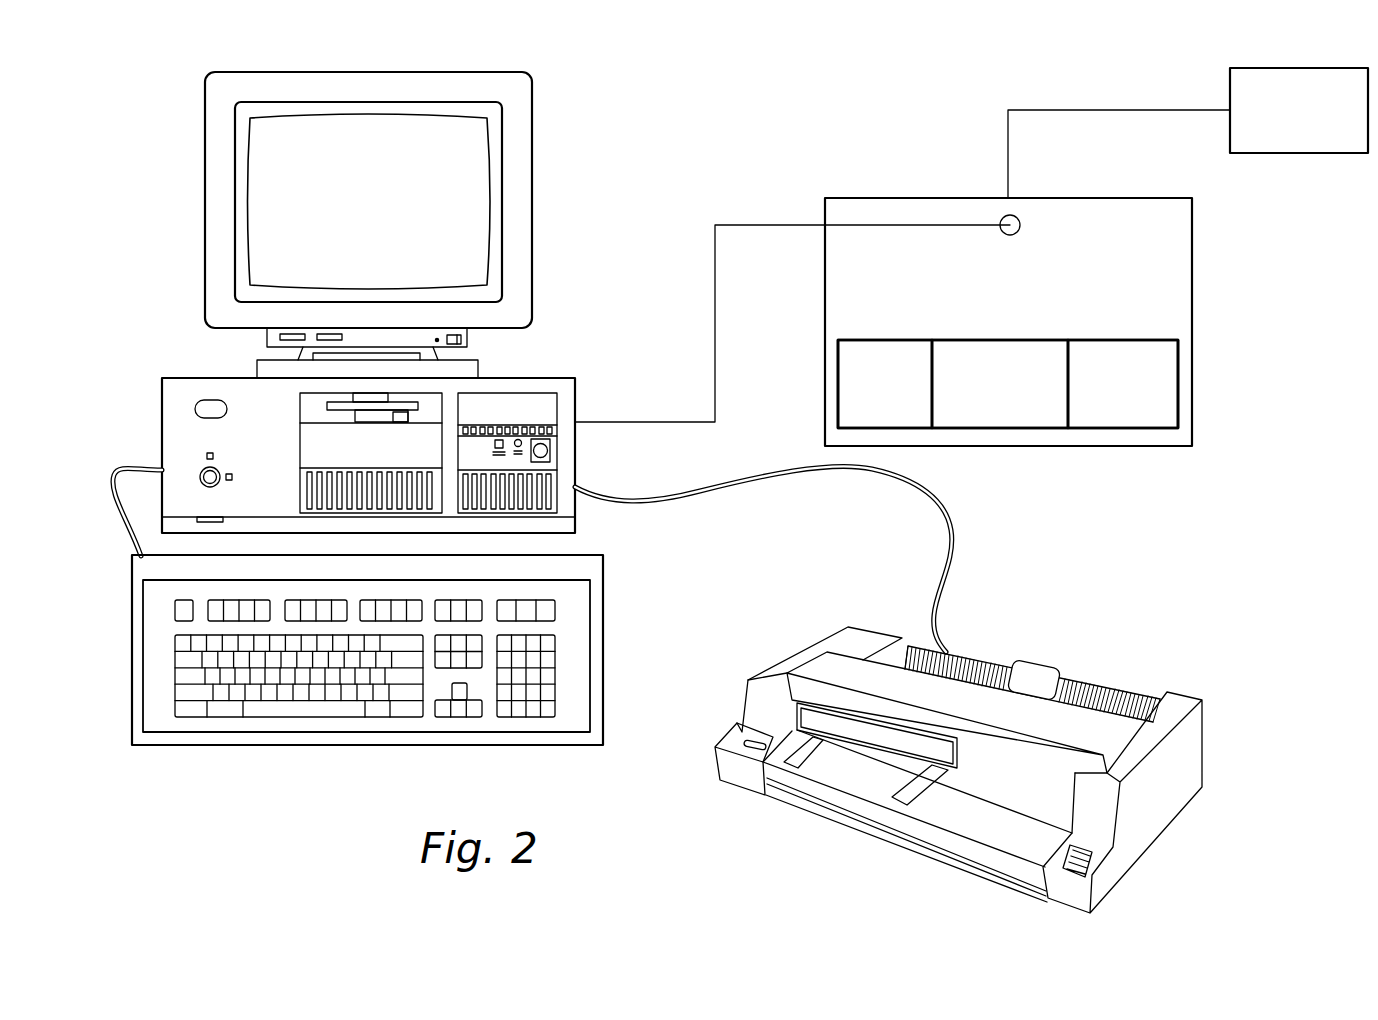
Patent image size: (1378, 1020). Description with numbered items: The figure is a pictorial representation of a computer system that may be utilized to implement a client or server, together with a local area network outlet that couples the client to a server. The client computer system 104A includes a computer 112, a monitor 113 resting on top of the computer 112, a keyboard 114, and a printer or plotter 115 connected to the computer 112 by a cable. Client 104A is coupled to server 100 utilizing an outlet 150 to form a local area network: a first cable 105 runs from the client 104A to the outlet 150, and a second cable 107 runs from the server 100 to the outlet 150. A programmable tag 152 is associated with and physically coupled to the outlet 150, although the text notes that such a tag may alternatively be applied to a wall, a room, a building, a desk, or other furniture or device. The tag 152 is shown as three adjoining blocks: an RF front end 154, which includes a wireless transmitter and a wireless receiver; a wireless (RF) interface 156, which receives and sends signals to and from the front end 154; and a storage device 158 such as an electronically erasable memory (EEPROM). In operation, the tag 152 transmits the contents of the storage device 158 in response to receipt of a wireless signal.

The computer system 104A is at (669, 126).
The monitor 113 is at (532, 219).
The computer 112 is at (575, 466).
The keyboard 114 is at (217, 745).
The printer or plotter 115 is at (1105, 683).
The first cable 105 is at (790, 223).
The second cable 107 is at (1053, 110).
The server 100 is at (1354, 140).
The outlet 150 is at (1022, 345).
The programmable tag 152 is at (1010, 340).
The RF front end 154 is at (838, 398).
The wireless (RF) interface 156 is at (1002, 428).
The storage device 158 is at (1113, 428).